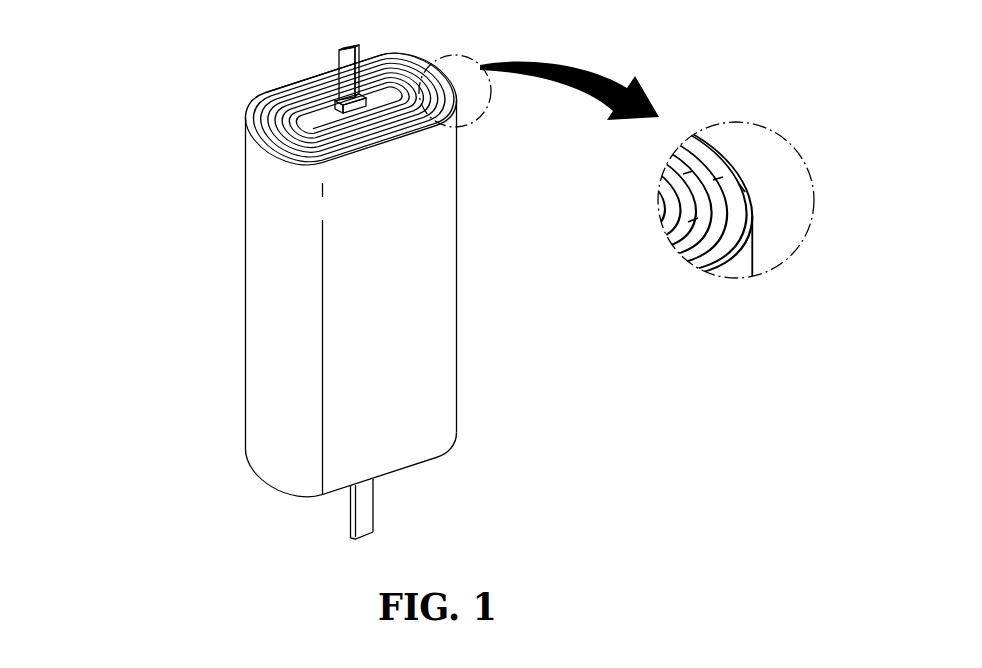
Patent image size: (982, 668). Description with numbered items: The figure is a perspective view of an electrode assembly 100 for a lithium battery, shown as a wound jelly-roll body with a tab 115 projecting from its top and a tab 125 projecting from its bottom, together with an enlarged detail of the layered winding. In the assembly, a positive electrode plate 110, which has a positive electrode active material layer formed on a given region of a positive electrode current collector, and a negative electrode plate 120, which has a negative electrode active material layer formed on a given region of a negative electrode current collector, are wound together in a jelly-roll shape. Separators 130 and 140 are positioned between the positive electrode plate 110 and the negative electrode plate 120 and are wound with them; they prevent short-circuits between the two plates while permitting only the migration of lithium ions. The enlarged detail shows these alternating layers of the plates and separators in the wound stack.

The electrode assembly 100 is at (147, 108).
The positive electrode plate 110 is at (693, 220).
The first electrode tab 115 is at (349, 72).
The negative electrode plate 120 is at (718, 178).
The second electrode tab 125 is at (367, 518).
The separator 130 is at (688, 172).
The separator 140 is at (742, 188).